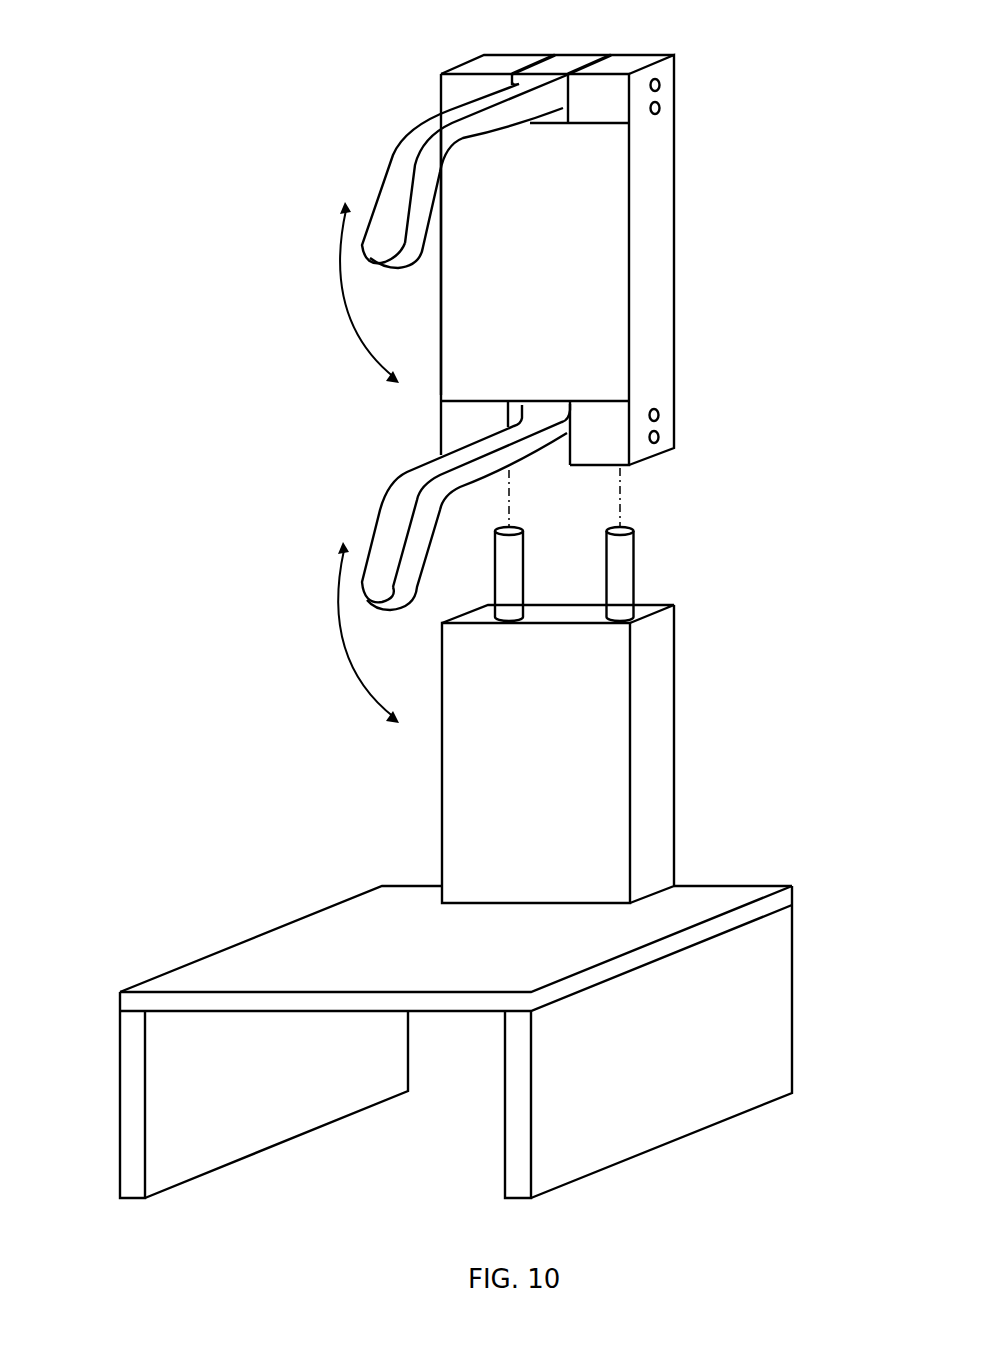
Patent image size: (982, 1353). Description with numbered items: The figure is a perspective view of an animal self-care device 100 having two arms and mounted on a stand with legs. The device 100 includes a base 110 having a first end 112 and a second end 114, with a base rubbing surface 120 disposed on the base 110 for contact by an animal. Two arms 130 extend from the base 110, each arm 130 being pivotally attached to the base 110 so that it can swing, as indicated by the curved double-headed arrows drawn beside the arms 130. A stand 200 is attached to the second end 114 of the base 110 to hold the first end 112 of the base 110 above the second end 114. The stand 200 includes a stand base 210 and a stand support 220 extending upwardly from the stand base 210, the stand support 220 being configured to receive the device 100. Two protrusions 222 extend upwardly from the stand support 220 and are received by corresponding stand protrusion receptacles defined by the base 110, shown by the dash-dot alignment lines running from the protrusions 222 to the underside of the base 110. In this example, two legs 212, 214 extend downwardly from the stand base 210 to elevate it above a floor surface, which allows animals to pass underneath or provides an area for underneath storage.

The animal self-care device 100 is at (357, 58).
The base 110 is at (660, 198).
The first end 112 is at (696, 93).
The second end 114 is at (696, 413).
The base rubbing surface 120 is at (597, 252).
The arm 130 is at (397, 142).
The stand 200 is at (249, 719).
The stand base 210 is at (301, 931).
The leg 212 is at (118, 1075).
The leg 214 is at (690, 1028).
The stand support 220 is at (661, 737).
The protrusions 222 is at (633, 563).